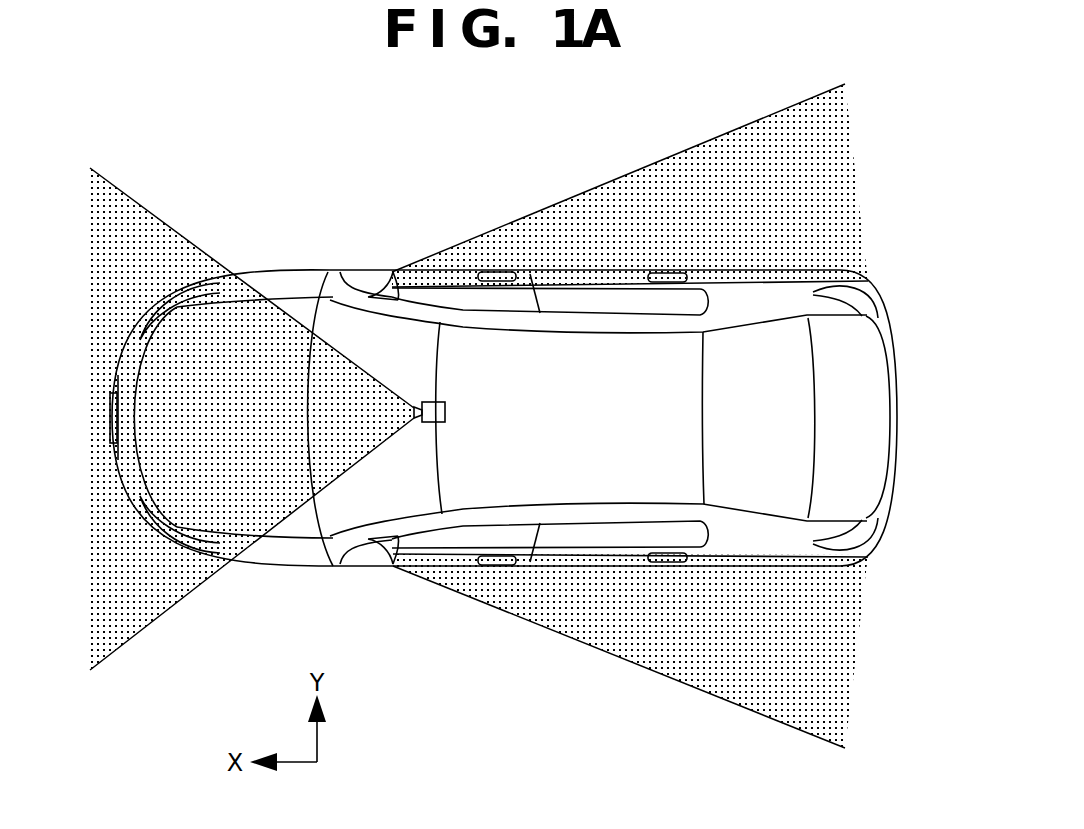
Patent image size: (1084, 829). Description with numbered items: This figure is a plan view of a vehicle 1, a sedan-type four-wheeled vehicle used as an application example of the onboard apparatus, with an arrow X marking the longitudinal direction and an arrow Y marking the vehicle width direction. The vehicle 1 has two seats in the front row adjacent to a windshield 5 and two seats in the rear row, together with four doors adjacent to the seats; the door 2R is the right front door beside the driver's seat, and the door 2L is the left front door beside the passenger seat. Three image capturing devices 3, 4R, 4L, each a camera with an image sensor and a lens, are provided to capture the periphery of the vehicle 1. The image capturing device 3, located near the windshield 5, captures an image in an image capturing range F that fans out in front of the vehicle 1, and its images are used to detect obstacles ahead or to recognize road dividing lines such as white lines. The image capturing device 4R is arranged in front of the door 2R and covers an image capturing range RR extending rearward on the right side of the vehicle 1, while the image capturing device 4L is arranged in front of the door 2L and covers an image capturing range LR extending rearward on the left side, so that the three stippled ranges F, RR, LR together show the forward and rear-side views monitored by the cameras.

The vehicle 1 is at (264, 192).
The door 2R is at (465, 300).
The door 2L is at (440, 570).
The image capturing device 3 is at (446, 410).
The image capturing device 4R is at (389, 270).
The image capturing device 4L is at (392, 570).
The windshield 5 is at (342, 328).
The image capturing range F is at (152, 212).
The image capturing range RR is at (582, 192).
The image capturing range LR is at (558, 632).